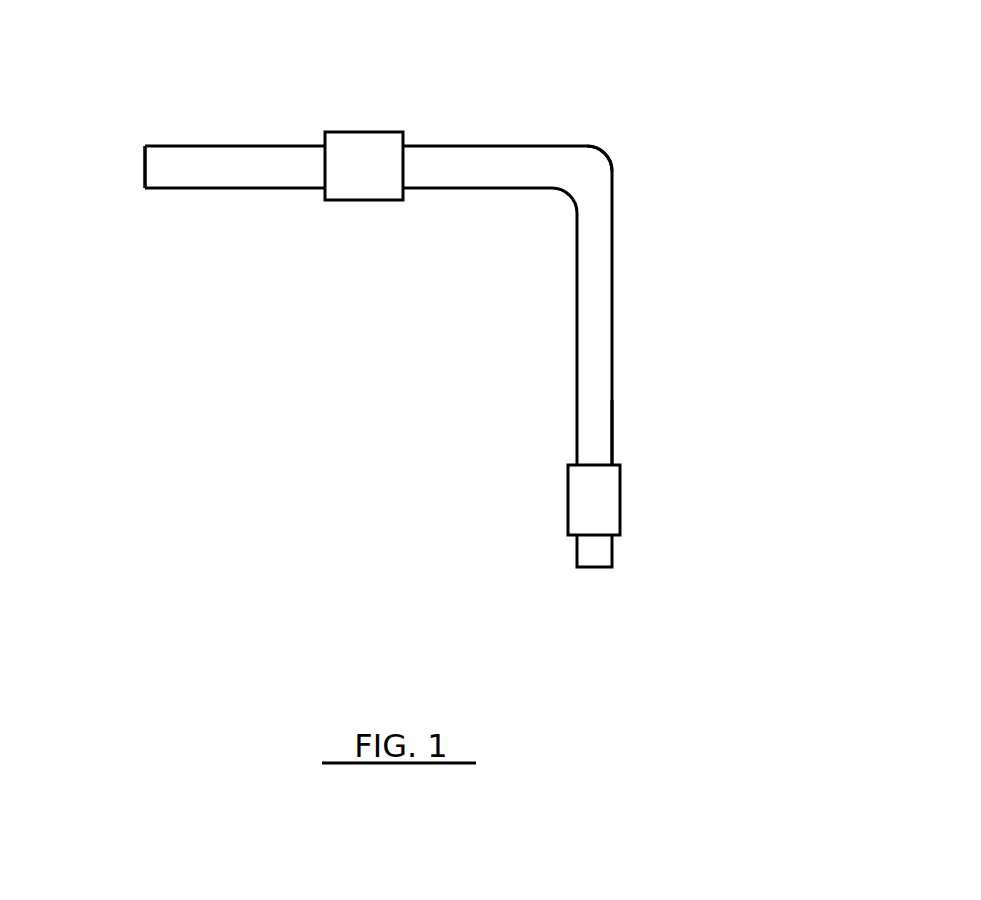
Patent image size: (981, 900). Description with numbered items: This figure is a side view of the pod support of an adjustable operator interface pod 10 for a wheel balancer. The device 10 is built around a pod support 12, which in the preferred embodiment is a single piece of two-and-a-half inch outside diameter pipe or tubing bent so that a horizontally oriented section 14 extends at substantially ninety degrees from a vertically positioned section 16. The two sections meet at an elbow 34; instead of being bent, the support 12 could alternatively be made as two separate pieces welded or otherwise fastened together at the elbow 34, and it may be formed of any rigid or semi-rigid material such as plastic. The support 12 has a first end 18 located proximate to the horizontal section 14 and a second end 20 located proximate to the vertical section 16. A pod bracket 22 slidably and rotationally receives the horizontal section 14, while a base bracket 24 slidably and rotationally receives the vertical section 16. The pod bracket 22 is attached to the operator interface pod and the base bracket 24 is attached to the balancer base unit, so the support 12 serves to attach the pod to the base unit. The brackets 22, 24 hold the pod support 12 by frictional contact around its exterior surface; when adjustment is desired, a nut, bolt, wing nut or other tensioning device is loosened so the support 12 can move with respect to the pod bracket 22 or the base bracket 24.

The adjustable operator interface pod 10 is at (733, 163).
The pod support 12 is at (612, 350).
The horizontally oriented section 14 is at (243, 142).
The vertically positioned section 16 is at (612, 437).
The first end 18 is at (145, 168).
The second end 20 is at (598, 567).
The pod bracket 22 is at (380, 130).
The base bracket 24 is at (620, 502).
The elbow 34 is at (602, 148).